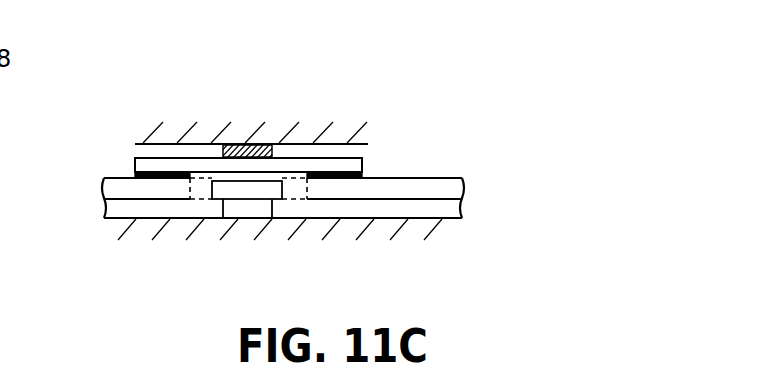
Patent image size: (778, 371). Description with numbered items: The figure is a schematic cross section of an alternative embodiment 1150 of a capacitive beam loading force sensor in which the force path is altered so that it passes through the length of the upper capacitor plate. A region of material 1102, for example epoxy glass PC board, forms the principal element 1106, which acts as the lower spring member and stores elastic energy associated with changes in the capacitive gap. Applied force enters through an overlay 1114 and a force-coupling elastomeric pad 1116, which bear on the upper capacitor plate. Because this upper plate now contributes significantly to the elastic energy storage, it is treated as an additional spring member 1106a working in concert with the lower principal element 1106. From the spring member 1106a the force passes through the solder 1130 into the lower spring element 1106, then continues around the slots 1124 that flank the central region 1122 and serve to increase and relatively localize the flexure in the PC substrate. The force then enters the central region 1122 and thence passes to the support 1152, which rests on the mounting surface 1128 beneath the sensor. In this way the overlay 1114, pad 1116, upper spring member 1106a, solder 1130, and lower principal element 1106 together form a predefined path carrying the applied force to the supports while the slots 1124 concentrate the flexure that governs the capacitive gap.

The region of material 1102 is at (448, 191).
The principal element 1106 is at (97, 188).
The additional spring member 1106a is at (161, 157).
The overlay 1114 is at (342, 128).
The force-coupling elastomeric pad 1116 is at (238, 145).
The central region 1122 is at (232, 188).
The slots 1124 is at (198, 192).
The surface 1128 is at (407, 223).
The solder 1130 is at (135, 172).
The embodiment 1150 is at (335, 78).
The support 1152 is at (250, 208).